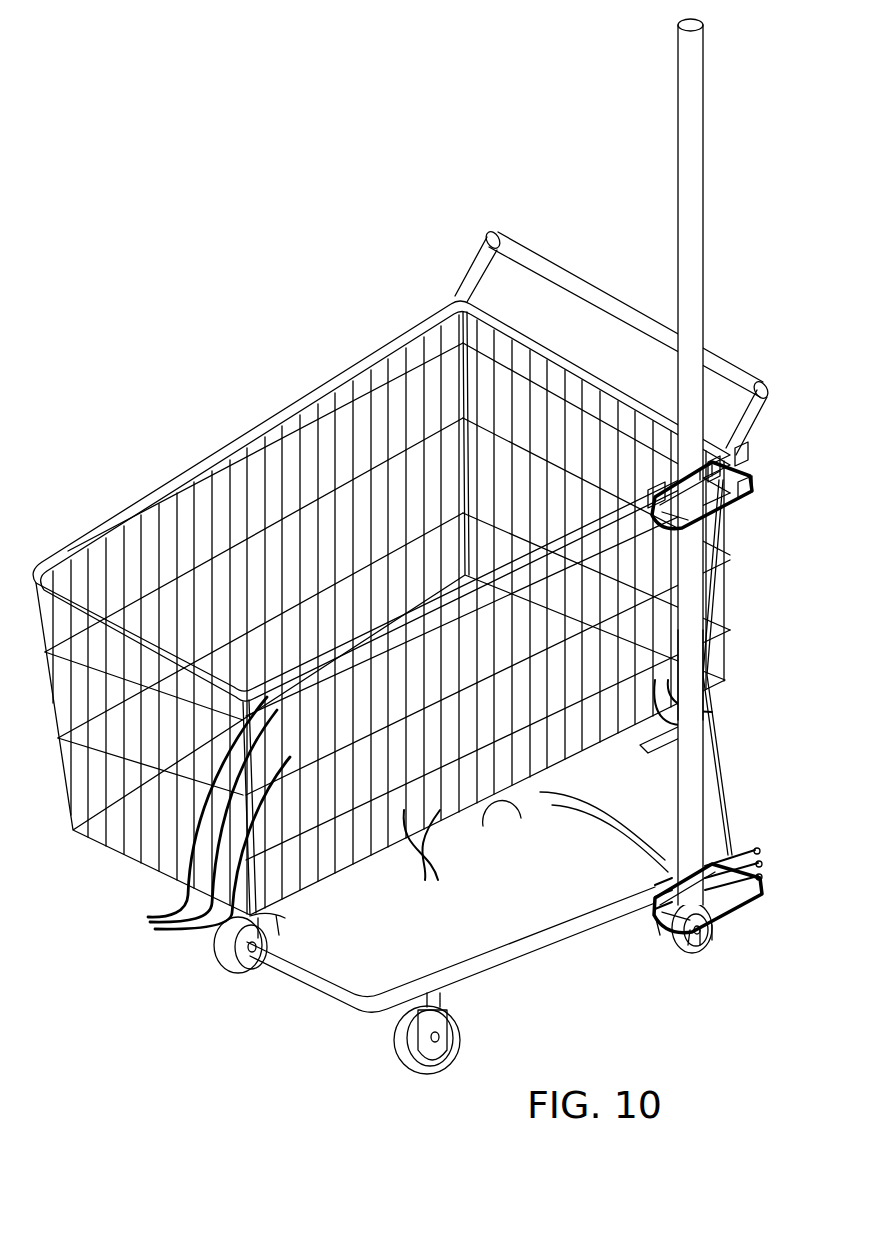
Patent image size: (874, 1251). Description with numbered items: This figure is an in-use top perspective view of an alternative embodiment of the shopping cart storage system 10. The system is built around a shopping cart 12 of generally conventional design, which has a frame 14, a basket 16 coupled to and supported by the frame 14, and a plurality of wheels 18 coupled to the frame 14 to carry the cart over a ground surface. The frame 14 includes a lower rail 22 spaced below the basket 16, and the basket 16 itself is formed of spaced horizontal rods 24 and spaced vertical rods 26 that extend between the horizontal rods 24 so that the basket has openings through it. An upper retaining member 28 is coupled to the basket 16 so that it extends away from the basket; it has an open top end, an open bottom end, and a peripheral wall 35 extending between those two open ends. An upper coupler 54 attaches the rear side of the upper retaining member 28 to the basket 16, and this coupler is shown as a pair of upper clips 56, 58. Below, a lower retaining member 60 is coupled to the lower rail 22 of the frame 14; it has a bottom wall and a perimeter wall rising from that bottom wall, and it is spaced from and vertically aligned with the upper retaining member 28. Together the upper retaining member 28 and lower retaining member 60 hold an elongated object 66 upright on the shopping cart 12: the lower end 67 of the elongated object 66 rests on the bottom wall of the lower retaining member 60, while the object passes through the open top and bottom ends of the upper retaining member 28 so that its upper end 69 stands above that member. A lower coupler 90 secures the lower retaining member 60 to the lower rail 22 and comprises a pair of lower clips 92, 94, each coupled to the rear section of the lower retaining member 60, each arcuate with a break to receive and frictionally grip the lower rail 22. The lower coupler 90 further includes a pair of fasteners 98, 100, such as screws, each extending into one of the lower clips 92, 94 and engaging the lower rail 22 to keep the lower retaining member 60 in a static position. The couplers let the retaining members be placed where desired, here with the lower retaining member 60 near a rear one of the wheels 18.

The shopping cart storage system 10 is at (787, 315).
The shopping cart 12 is at (775, 432).
The frame 14 is at (660, 818).
The basket 16 is at (712, 597).
The wheels 18 is at (237, 977).
The lower rail 22 is at (512, 955).
The horizontal rods 24 is at (148, 919).
The vertical rods 26 is at (712, 712).
The upper retaining member 28 is at (745, 462).
The peripheral wall 35 is at (765, 484).
The upper coupler 54 is at (712, 468).
The upper clip 56 is at (660, 492).
The upper clip 58 is at (740, 455).
The lower retaining member 60 is at (730, 935).
The elongated object 66 is at (690, 672).
The lower end 67 is at (690, 945).
The upper end 69 is at (698, 163).
The lower coupler 90 is at (650, 886).
The lower clip 92 is at (655, 875).
The lower clip 94 is at (715, 855).
The fastener 98 is at (660, 935).
The fastener 100 is at (735, 860).